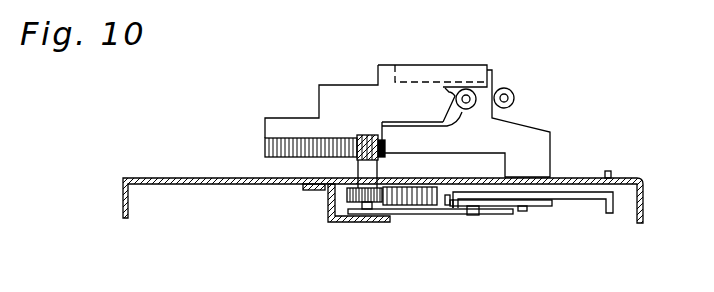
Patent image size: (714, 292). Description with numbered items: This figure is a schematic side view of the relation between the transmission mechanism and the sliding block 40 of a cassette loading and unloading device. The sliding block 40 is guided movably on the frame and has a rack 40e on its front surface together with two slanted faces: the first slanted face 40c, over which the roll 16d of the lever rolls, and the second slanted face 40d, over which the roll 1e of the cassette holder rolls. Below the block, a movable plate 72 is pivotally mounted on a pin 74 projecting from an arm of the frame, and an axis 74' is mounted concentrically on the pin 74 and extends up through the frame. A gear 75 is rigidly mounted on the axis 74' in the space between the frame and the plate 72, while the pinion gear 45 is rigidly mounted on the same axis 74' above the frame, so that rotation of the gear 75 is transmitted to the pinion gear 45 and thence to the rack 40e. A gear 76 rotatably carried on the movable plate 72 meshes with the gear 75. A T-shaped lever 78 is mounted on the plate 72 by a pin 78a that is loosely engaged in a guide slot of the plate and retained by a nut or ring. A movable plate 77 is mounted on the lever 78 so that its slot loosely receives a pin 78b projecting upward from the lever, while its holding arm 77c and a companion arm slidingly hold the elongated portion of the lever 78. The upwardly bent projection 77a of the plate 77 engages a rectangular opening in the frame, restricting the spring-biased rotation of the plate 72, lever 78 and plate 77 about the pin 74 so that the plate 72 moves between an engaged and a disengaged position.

The sliding block 40 is at (347, 97).
The roll 1e is at (445, 88).
The pinion gear 45 is at (357, 136).
The roll 16d is at (514, 92).
The second slanted face 40d is at (492, 113).
The first slanted face 40c is at (420, 128).
The upwardly bent projection 77a is at (610, 176).
The rack 40e is at (265, 150).
The axis 74' is at (298, 161).
The gear 75 is at (325, 200).
The pin 74 is at (417, 242).
The gear 76 is at (398, 205).
The movable plate 72 is at (428, 207).
The holding arm 77c is at (455, 207).
The pin 78a is at (473, 216).
The pin 78b is at (525, 209).
The T-shaped lever 78 is at (547, 204).
The movable plate 77 is at (592, 199).